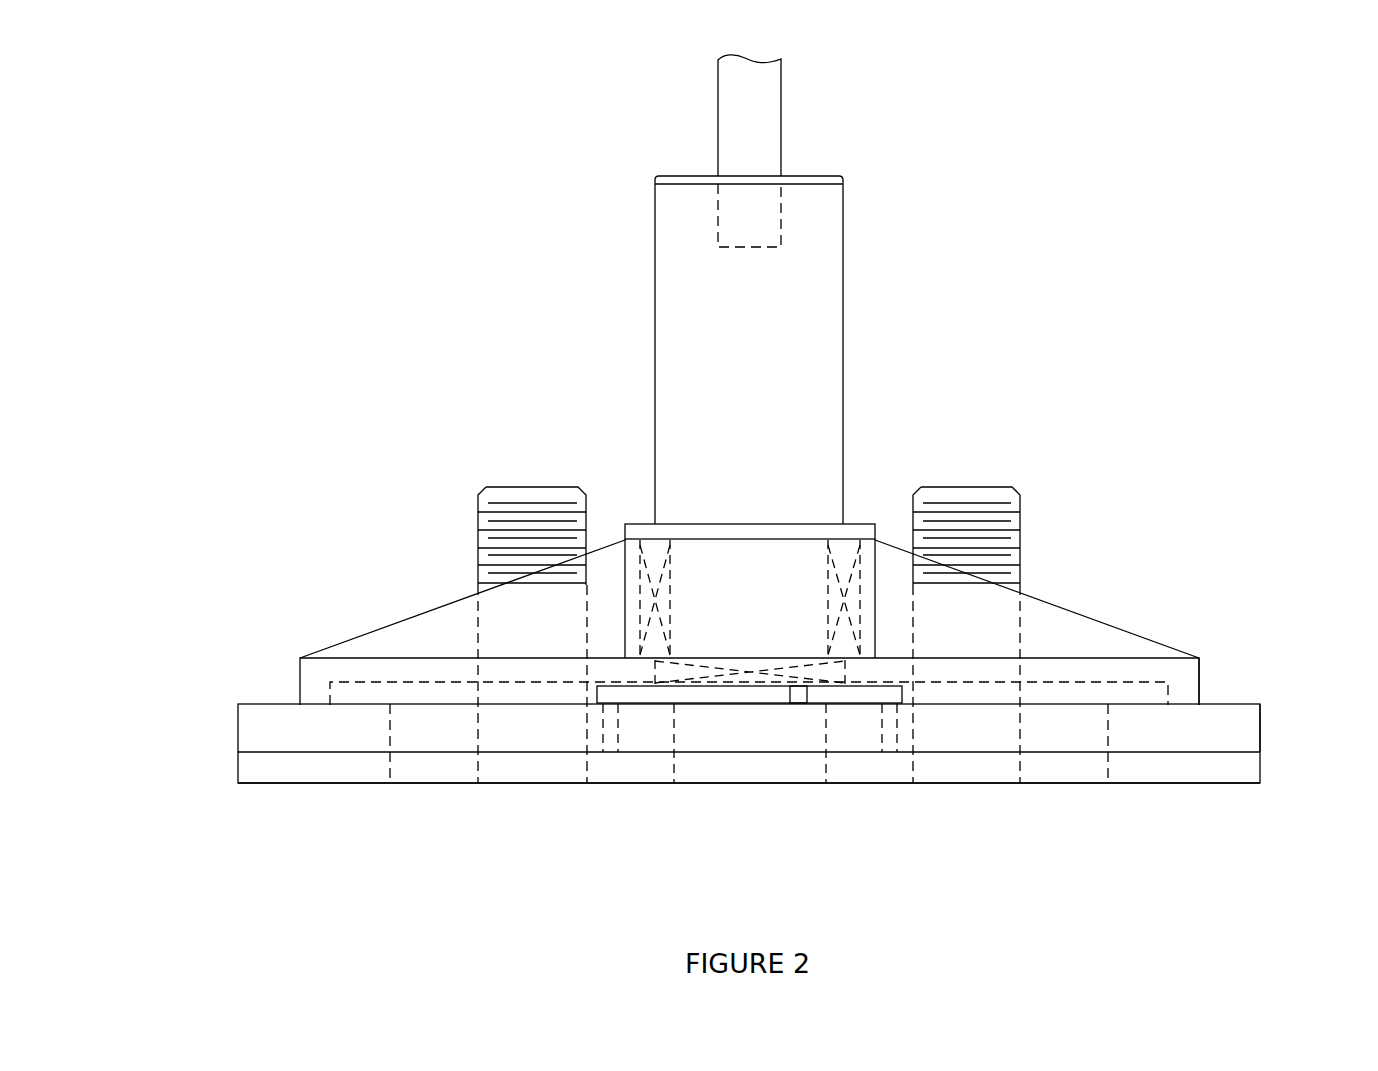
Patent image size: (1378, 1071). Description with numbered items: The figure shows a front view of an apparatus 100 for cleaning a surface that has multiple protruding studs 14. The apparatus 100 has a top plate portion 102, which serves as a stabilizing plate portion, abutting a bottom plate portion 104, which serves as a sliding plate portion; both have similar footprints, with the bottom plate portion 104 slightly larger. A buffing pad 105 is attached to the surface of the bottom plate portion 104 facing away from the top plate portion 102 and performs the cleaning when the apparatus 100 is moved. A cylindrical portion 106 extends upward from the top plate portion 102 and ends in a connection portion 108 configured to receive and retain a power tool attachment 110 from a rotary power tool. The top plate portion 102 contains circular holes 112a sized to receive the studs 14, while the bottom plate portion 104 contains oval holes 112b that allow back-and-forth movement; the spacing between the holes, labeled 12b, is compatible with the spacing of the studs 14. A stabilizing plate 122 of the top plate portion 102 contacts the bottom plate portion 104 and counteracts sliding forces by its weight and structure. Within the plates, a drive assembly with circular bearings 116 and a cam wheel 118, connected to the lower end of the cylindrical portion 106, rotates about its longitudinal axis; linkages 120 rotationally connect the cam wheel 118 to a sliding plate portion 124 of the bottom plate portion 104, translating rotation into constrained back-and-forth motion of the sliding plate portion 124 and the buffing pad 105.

The apparatus 100 is at (465, 220).
The top plate portion 102 is at (298, 677).
The bottom plate portion 104 is at (238, 716).
The buffing pad 105 is at (1242, 786).
The cylindrical portion 106 is at (845, 352).
The connection portion 108 is at (768, 172).
The power tool attachment 110 is at (718, 113).
The holes 112a is at (478, 665).
The holes 112b is at (390, 772).
The stud 14 is at (530, 483).
The circular bearing 116 is at (672, 597).
The cam wheel 118 is at (717, 660).
The linkages 120 is at (703, 708).
The stabilizing plate 122 is at (1200, 682).
The sliding plate portion 124 is at (1262, 727).
The bolt spacing dimension 12b is at (907, 867).